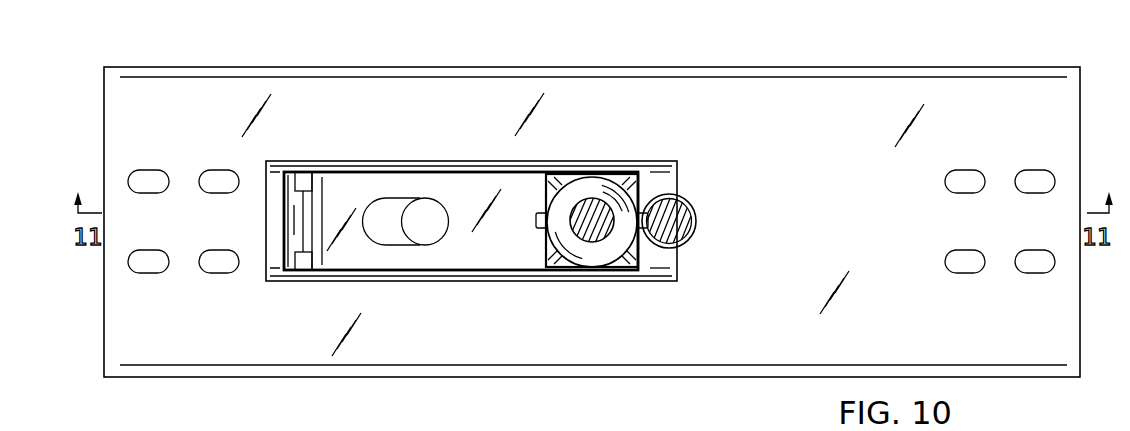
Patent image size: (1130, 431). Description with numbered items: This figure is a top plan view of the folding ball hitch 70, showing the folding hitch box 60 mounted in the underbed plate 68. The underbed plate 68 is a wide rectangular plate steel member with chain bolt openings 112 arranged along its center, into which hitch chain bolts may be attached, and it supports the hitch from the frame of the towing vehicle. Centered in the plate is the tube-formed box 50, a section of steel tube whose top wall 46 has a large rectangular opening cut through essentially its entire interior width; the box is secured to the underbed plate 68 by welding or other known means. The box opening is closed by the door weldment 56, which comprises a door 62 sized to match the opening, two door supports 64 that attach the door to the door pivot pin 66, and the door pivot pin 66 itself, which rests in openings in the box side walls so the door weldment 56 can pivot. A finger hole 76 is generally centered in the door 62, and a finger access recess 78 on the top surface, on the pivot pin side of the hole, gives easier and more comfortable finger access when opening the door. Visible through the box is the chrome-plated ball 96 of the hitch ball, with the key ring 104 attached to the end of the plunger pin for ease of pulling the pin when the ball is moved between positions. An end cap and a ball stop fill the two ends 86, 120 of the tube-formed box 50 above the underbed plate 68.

The top wall 46 is at (667, 182).
The tube-formed box 50 is at (555, 155).
The door weldment 56 is at (349, 187).
The folding hitch box 60 is at (635, 115).
The door 62 is at (445, 175).
The door supports 64 is at (302, 258).
The door pivot pin 66 is at (297, 190).
The underbed plate 68 is at (818, 95).
The folding ball hitch 70 is at (889, 54).
The finger hole 76 is at (423, 230).
The finger access recess 78 is at (382, 228).
The end of the tube-formed box 86 is at (265, 265).
The ball 96 is at (592, 258).
The key ring 104 is at (694, 229).
The chain bolt openings 112 is at (227, 170).
The end of the tube-formed box 120 is at (680, 268).